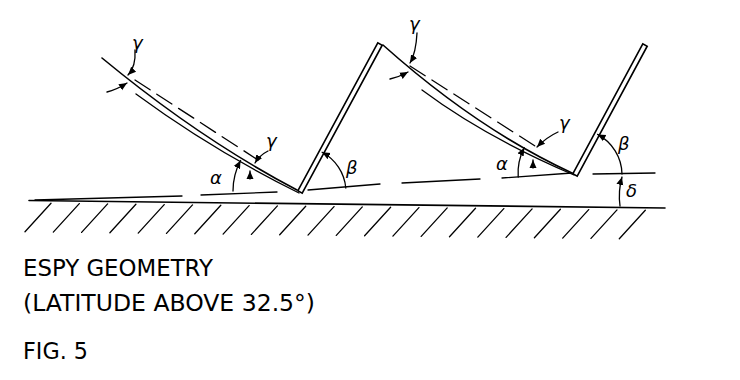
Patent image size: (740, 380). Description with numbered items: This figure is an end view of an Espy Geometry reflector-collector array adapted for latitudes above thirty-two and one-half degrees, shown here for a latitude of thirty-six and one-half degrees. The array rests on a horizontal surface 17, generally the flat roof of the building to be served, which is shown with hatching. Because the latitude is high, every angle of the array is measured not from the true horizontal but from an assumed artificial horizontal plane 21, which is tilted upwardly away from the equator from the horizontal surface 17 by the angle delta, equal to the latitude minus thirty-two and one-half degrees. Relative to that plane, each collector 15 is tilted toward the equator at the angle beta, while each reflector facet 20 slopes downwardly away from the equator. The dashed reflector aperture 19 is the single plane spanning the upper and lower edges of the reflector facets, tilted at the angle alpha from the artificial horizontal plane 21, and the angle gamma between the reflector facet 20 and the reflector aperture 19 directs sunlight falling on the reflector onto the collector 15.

The collector 15 is at (364, 73).
The horizontal surface 17 is at (643, 208).
The reflector aperture 19 is at (189, 115).
The reflector facet 20 is at (139, 97).
The assumed artificial horizontal plane 21 is at (631, 173).